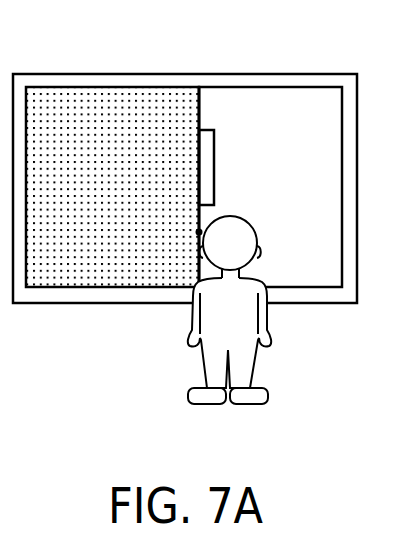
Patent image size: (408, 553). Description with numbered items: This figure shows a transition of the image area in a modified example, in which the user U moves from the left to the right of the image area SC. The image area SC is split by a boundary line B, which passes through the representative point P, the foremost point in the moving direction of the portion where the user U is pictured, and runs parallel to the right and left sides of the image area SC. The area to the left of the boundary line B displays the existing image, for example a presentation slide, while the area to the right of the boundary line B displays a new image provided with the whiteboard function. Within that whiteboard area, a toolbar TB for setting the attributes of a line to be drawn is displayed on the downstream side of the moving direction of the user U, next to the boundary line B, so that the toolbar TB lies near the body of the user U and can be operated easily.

The image area SC is at (325, 303).
The boundary line B is at (201, 104).
The toolbar TB is at (203, 133).
The user U is at (258, 389).
The representative point P is at (199, 232).